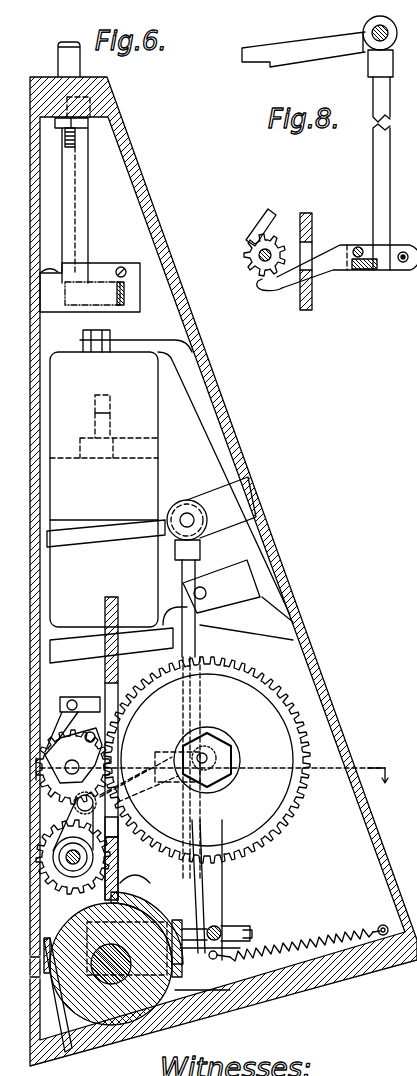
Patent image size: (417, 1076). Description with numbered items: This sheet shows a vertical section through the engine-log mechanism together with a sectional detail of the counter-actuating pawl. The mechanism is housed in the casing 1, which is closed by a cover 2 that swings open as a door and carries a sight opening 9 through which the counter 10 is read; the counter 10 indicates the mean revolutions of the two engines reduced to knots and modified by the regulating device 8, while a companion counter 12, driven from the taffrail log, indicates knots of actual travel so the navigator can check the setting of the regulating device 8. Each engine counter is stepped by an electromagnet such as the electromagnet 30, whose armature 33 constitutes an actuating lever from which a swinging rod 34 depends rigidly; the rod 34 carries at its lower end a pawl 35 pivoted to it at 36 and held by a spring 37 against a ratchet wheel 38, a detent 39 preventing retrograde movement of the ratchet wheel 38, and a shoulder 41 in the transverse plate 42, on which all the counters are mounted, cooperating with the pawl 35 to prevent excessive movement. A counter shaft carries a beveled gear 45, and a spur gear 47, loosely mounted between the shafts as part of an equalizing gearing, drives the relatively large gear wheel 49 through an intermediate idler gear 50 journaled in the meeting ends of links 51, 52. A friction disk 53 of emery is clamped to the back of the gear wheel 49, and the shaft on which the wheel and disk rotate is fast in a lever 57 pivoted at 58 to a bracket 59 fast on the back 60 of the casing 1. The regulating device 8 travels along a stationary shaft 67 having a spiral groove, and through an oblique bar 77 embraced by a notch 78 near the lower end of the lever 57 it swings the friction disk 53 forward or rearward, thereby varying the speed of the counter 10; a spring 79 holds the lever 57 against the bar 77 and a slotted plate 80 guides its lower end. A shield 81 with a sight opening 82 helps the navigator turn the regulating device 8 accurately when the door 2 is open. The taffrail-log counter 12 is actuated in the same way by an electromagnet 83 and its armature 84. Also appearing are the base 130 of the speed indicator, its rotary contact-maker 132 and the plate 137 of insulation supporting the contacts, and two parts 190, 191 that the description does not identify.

In FIG. 6, the casing 1 is at (326, 1000).
In FIG. 6, the cover 2 is at (40, 400).
In FIG. 6, the regulating device 8 is at (160, 1000).
In FIG. 6, the sight opening 9 is at (211, 770).
In FIG. 8, the counter 10 is at (390, 28).
In FIG. 6, the counter 12 is at (110, 742).
In FIG. 6, the electromagnet 30 is at (121, 478).
In FIG. 6, the armature 33 is at (82, 645).
In FIG. 8, the armature 33 is at (262, 62).
In FIG. 6, the swinging rod 34 is at (165, 812).
In FIG. 8, the swinging rod 34 is at (373, 152).
In FIG. 6, the pawl 35 is at (145, 880).
In FIG. 8, the pawl 35 is at (272, 290).
In FIG. 6, the pivot 36 is at (162, 880).
In FIG. 8, the pivot 36 is at (356, 247).
In FIG. 8, the spring 37 is at (358, 269).
In FIG. 8, the ratchet wheel 38 is at (244, 265).
In FIG. 8, the detent 39 is at (256, 222).
In FIG. 8, the shoulder 41 is at (318, 275).
In FIG. 8, the transverse plate 42 is at (306, 215).
In FIG. 6, the beveled gear 45 is at (80, 885).
In FIG. 6, the spur gear 47 is at (62, 893).
In FIG. 6, the gear wheel 49 is at (290, 803).
In FIG. 6, the intermediate idler gear 50 is at (75, 810).
In FIG. 6, the link 51 is at (139, 783).
In FIG. 6, the link 52 is at (184, 777).
In FIG. 6, the friction disk 53 is at (220, 756).
In FIG. 6, the lever 57 is at (215, 700).
In FIG. 6, the pivot 58 is at (206, 593).
In FIG. 6, the bracket 59 is at (262, 557).
In FIG. 6, the back 60 is at (218, 486).
In FIG. 6, the stationary shaft 67 is at (210, 886).
In FIG. 6, the oblique bar 77 is at (238, 930).
In FIG. 6, the notch 78 is at (218, 925).
In FIG. 6, the spring 79 is at (325, 943).
In FIG. 6, the slotted plate 80 is at (227, 990).
In FIG. 6, the shield 81 is at (80, 1028).
In FIG. 6, the sight opening 82 is at (62, 928).
In FIG. 6, the electromagnet 83 is at (194, 483).
In FIG. 6, the armature 84 is at (105, 530).
In FIG. 6, the base 130 is at (88, 207).
In FIG. 6, the rotary contact-maker 132 is at (70, 162).
In FIG. 6, the plate of insulation 137 is at (75, 223).
In FIG. 6, the bracket 190 is at (70, 263).
In FIG. 6, the slide 191 is at (85, 300).